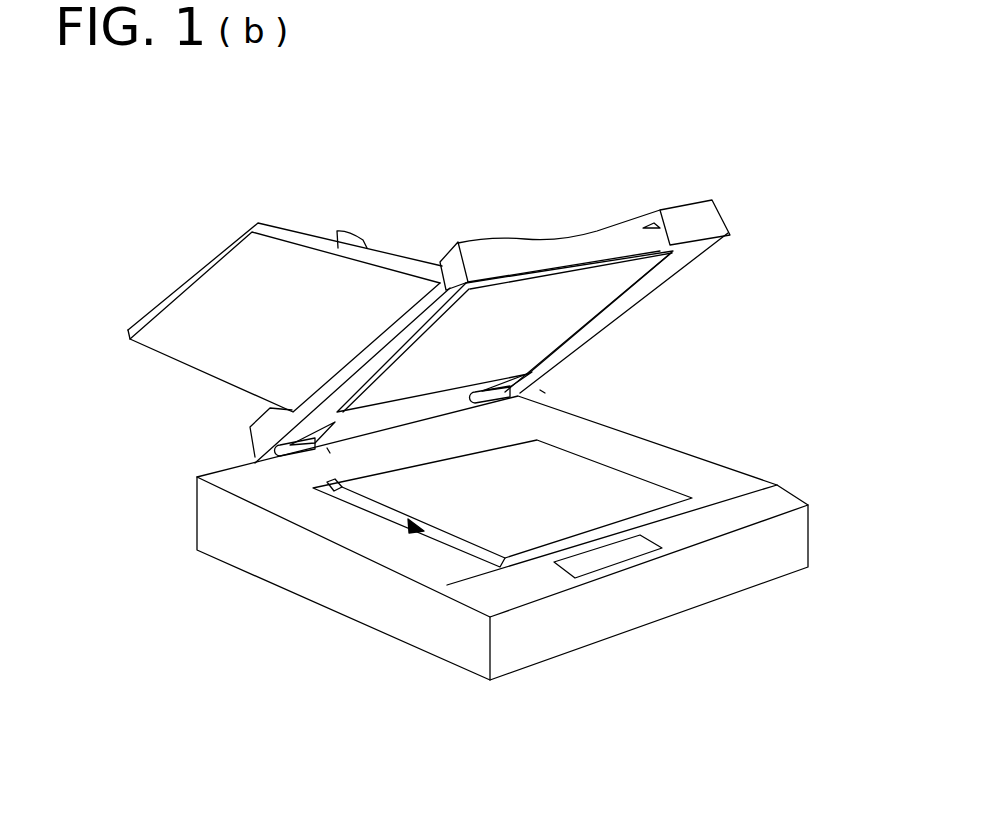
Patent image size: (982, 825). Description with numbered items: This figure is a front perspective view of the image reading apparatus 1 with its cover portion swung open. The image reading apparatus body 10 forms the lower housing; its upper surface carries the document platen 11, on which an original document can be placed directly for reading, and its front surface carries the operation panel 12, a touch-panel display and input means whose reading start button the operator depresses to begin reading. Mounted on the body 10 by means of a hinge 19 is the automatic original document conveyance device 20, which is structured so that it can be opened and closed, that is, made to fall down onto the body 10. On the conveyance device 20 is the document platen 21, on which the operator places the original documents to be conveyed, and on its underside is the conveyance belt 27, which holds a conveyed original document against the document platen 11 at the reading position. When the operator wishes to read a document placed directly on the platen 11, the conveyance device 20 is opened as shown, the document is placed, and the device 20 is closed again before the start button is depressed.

The image reading apparatus 1 is at (777, 268).
The image reading apparatus body 10 is at (742, 467).
The document platen 11 is at (558, 463).
The operation panel 12 is at (607, 557).
The hinge 19 is at (300, 455).
The automatic original document conveyance device 20 is at (695, 218).
The document platen 21 is at (297, 235).
The conveyance belt 27 is at (553, 313).